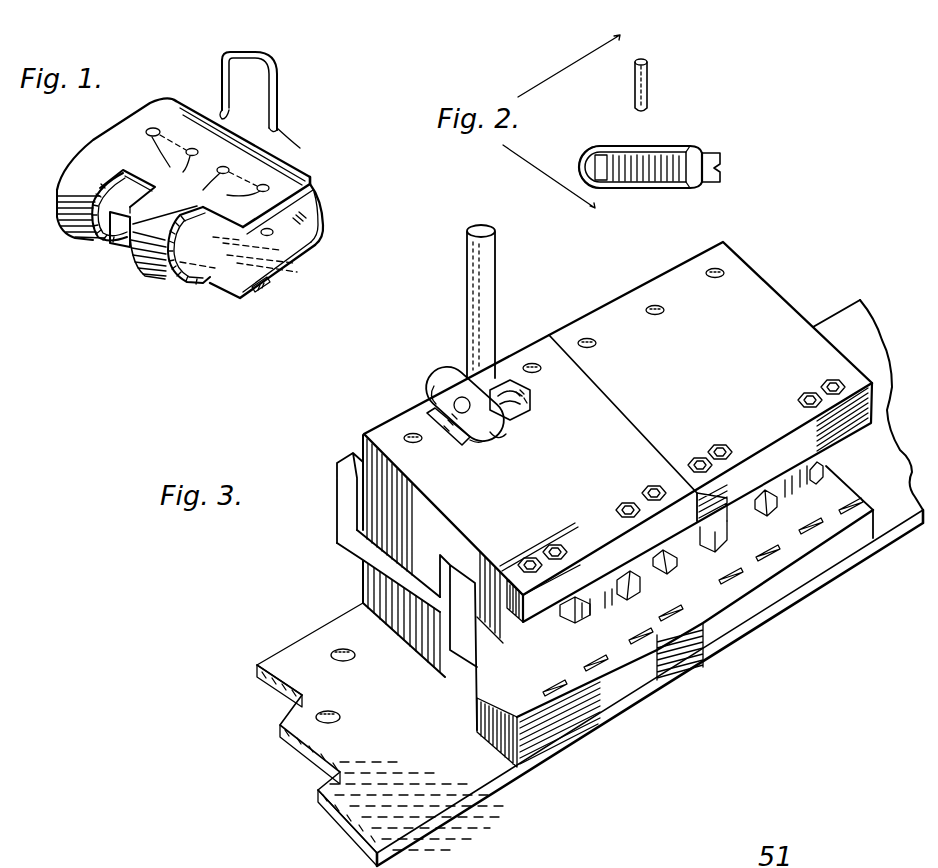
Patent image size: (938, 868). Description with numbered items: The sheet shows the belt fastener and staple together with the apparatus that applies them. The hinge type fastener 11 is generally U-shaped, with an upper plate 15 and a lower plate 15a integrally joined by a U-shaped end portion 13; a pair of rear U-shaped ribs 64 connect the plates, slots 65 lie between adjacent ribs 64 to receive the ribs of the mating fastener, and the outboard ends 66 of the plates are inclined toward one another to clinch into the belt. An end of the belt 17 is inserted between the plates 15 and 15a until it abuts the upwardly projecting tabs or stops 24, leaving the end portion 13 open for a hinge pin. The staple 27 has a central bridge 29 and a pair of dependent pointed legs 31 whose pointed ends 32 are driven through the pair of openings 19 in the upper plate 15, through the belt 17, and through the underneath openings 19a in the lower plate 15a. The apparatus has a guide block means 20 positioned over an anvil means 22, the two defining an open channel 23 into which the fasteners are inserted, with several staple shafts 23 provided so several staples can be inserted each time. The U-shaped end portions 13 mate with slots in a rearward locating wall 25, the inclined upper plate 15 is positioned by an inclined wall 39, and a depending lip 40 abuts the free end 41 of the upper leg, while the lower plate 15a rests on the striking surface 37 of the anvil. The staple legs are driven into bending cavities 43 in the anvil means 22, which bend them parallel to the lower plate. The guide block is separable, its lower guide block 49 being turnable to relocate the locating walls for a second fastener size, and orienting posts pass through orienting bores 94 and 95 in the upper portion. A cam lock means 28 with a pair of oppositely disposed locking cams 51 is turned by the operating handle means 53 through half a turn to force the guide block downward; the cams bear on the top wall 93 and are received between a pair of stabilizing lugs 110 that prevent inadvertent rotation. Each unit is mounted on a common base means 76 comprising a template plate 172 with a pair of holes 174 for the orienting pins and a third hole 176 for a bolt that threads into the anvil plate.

In FIG. 1, the hinge type fastener 11 is at (297, 132).
In FIG. 2, the hinge type fastener 11 is at (626, 204).
In FIG. 1, the U-shaped end portion 13 is at (84, 210).
In FIG. 2, the U-shaped end portion 13 is at (583, 172).
In FIG. 1, the upper plate 15 is at (304, 174).
In FIG. 2, the upper plate 15 is at (640, 147).
In FIG. 1, the lower plate 15a is at (262, 294).
In FIG. 2, the lower plate 15a is at (672, 192).
In FIG. 2, the belt 17 is at (722, 168).
In FIG. 1, the openings 19 is at (216, 176).
In FIG. 1, the underneath openings 19a is at (275, 233).
In FIG. 3, the guide block means 20 is at (329, 580).
In FIG. 3, the anvil means 22 is at (325, 604).
In FIG. 3, the open channel 23 is at (557, 544).
In FIG. 1, the tabs or stops 24 is at (118, 232).
In FIG. 2, the tabs or stops 24 is at (598, 150).
In FIG. 3, the rearward locating wall 25 is at (481, 660).
In FIG. 1, the staple 27 is at (297, 79).
In FIG. 2, the staple 27 is at (648, 74).
In FIG. 3, the cam lock means 28 is at (526, 329).
In FIG. 1, the central bridge 29 is at (277, 27).
In FIG. 1, the staple legs 31 is at (223, 78).
In FIG. 1, the pointed ends 32 is at (222, 106).
In FIG. 3, the striking surface 37 is at (830, 490).
In FIG. 3, the inclined wall 39 is at (523, 560).
In FIG. 3, the depending lip 40 is at (531, 598).
In FIG. 1, the free end 41 is at (257, 106).
In FIG. 3, the bending cavities 43 is at (616, 641).
In FIG. 3, the lower guide block 49 is at (346, 484).
In FIG. 3, the locking cams 51 is at (434, 382).
In FIG. 3, the operating handle means 53 is at (497, 272).
In FIG. 1, the U-shaped ribs 64 is at (60, 192).
In FIG. 1, the slots 65 is at (112, 198).
In FIG. 1, the outboard ends 66 is at (320, 188).
In FIG. 2, the outboard ends 66 is at (690, 150).
In FIG. 3, the base means 76 is at (305, 661).
In FIG. 3, the top wall 93 is at (607, 469).
In FIG. 3, the orienting bore 94 is at (412, 432).
In FIG. 3, the orienting bore 95 is at (537, 374).
In FIG. 3, the stabilizing lugs 110 is at (458, 445).
In FIG. 3, the template plate 172 is at (319, 792).
In FIG. 3, the holes 174 is at (340, 662).
In FIG. 3, the third hole 176 is at (316, 716).